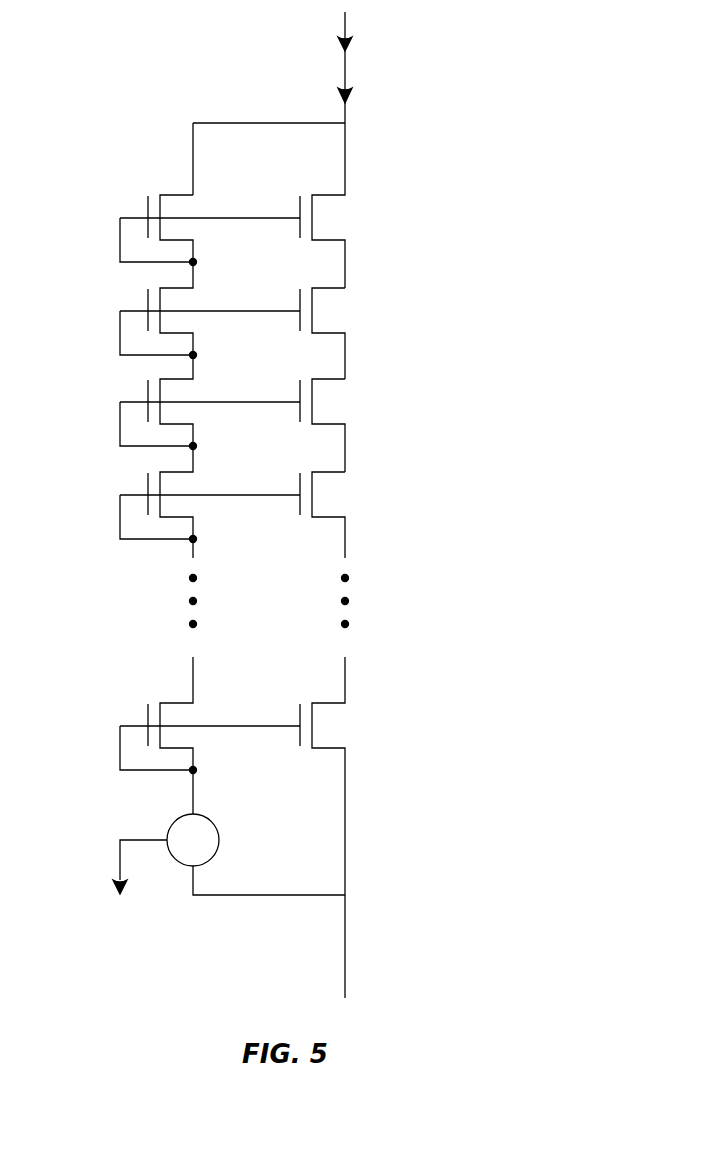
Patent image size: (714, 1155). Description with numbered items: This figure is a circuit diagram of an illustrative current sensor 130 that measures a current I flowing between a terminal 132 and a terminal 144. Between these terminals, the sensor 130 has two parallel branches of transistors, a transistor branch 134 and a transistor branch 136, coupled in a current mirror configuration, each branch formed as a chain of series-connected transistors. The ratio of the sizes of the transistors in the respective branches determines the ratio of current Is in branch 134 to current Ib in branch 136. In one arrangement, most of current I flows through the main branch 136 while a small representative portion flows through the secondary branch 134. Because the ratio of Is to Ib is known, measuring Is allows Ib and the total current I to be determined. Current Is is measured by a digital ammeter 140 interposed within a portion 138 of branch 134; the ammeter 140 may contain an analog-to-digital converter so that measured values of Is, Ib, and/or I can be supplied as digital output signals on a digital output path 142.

The current sensor 130 is at (557, 213).
The terminal 132 is at (346, 70).
The transistor branch 134 is at (75, 173).
The transistor branch 136 is at (427, 173).
The portion 138 is at (195, 798).
The digital ammeter 140 is at (177, 860).
The digital output path 142 is at (118, 863).
The terminal 144 is at (346, 958).